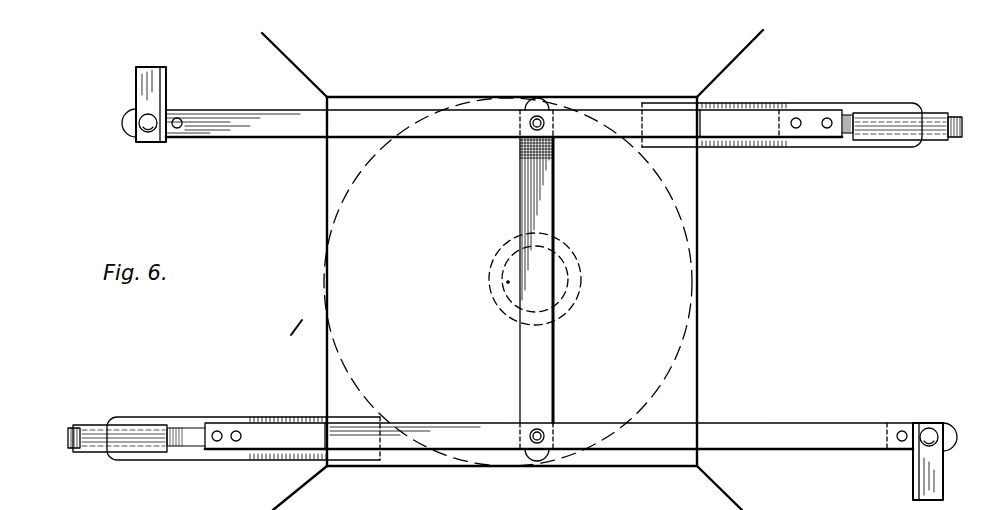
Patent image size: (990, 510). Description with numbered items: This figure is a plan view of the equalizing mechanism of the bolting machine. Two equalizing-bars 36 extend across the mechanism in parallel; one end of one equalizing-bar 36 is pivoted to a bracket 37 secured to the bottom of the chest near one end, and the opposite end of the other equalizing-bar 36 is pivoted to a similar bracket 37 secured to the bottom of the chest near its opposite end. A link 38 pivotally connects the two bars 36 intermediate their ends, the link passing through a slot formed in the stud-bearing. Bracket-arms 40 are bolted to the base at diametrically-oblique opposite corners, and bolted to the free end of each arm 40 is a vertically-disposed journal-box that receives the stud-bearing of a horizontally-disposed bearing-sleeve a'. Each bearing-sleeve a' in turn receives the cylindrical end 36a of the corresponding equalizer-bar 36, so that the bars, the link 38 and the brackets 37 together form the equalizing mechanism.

The equalizing-bar 36 is at (290, 123).
The cylindrical end of the equalizer-bar 36a is at (952, 140).
The bracket 37 is at (139, 93).
The link 38 is at (542, 358).
The bracket-arm 40 is at (817, 141).
The bearing-sleeve a' is at (515, 299).